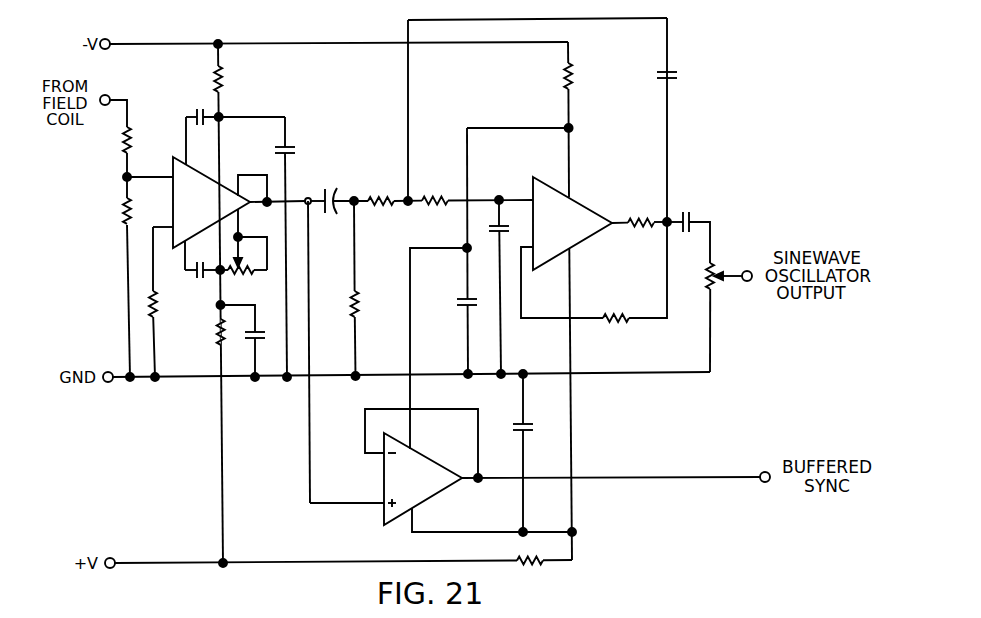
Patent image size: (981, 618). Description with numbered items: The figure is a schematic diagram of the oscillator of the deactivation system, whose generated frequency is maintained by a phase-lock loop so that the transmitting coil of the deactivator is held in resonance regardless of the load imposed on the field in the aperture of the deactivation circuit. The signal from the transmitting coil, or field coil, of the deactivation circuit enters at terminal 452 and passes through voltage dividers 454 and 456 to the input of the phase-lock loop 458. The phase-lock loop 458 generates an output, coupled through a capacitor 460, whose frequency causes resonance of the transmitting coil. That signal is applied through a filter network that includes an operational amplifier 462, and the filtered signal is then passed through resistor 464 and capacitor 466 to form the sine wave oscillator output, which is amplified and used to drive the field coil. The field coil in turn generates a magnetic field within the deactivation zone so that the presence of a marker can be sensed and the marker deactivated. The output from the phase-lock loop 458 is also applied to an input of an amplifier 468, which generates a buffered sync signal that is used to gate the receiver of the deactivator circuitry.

The terminal 452 is at (112, 98).
The voltage divider 454 is at (121, 141).
The voltage divider 456 is at (121, 214).
The phase-lock loop 458 is at (221, 214).
The capacitor 460 is at (327, 192).
The operational amplifier 462 is at (581, 235).
The resistor 464 is at (640, 229).
The capacitor 466 is at (691, 211).
The amplifier 468 is at (436, 489).